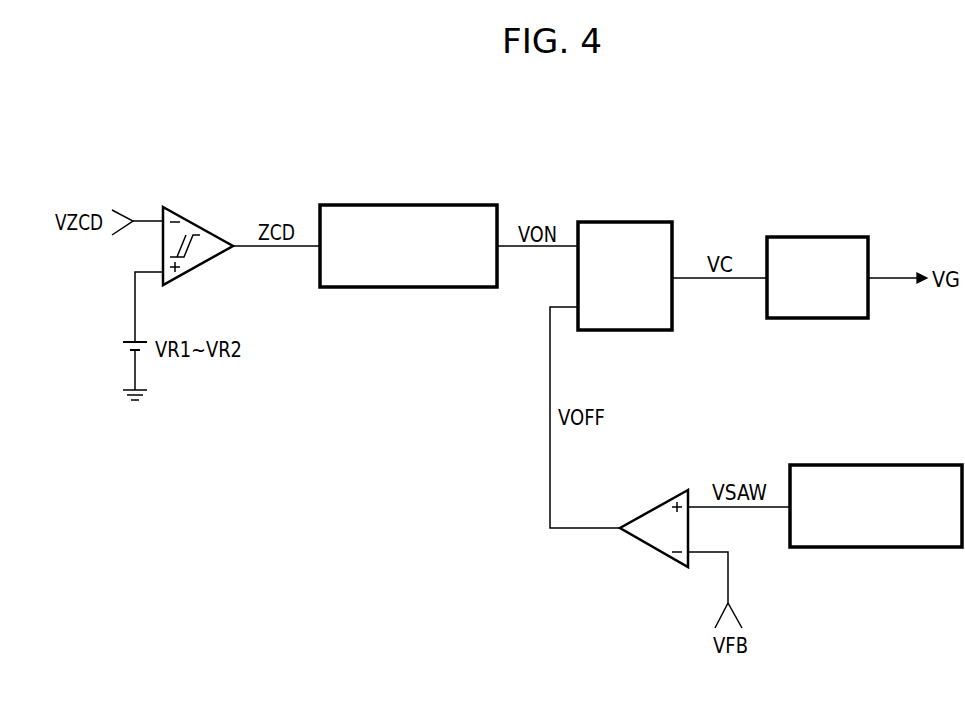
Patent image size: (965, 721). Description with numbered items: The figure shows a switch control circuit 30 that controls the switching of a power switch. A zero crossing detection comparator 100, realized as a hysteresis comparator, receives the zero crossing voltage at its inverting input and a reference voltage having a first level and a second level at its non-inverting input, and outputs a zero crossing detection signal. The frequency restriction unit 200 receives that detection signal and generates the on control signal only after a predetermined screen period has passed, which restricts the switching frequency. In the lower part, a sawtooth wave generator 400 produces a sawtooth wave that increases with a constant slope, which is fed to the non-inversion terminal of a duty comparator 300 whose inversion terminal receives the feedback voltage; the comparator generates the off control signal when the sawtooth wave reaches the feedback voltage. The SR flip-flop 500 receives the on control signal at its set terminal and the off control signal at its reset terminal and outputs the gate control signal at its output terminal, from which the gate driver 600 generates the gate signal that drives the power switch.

The switch control circuit 30 is at (760, 153).
The zero crossing detection comparator 100 is at (191, 220).
The frequency restriction unit 200 is at (455, 205).
The duty comparator 300 is at (640, 544).
The sawtooth wave generator 400 is at (908, 465).
The SR flip-flop 500 is at (632, 222).
The gate driver 600 is at (833, 237).